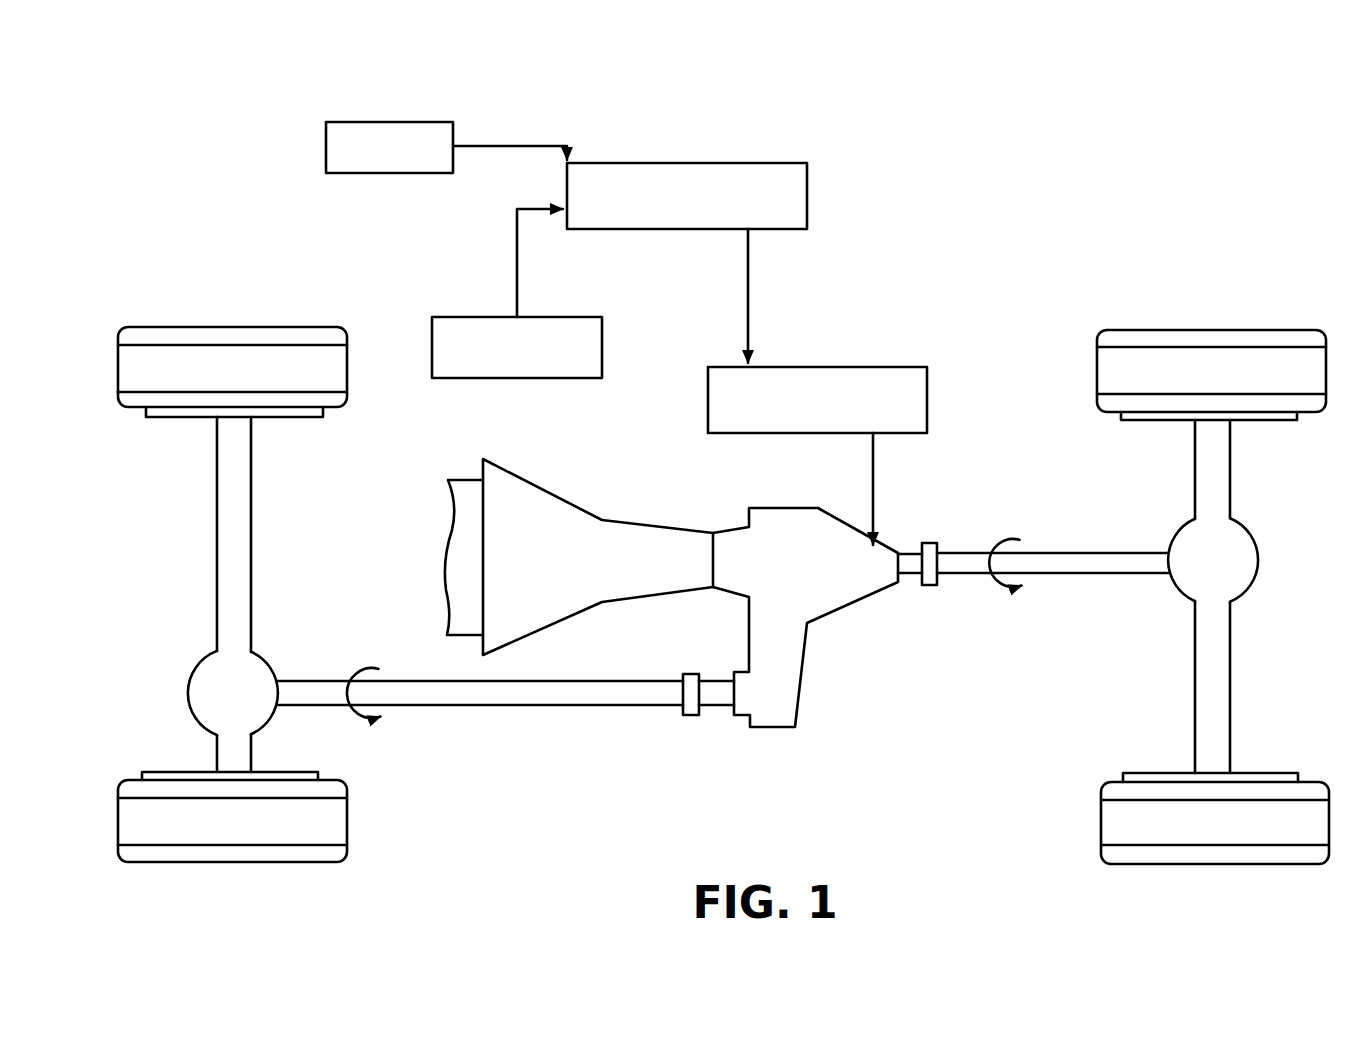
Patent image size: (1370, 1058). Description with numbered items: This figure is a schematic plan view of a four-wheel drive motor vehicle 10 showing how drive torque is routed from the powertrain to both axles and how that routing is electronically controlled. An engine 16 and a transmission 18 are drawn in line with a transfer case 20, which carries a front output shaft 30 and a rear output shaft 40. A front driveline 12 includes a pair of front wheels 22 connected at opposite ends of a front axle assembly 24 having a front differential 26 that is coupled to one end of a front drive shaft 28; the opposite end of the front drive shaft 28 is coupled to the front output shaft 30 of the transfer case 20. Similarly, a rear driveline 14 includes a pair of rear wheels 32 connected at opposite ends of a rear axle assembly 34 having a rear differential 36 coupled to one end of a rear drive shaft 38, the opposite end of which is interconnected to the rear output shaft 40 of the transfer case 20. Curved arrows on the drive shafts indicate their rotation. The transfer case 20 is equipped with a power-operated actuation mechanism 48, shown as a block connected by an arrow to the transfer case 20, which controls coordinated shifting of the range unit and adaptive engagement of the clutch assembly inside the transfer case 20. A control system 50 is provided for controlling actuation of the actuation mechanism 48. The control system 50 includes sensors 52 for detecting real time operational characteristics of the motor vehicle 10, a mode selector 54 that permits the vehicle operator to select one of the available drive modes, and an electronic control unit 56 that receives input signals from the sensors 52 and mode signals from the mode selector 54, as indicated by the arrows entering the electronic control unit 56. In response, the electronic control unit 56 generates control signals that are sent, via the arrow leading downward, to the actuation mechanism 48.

The motor vehicle 10 is at (930, 240).
The rear driveline 12 is at (308, 650).
The rear driveline 14 is at (1165, 643).
The engine 16 is at (465, 512).
The transmission 18 is at (580, 573).
The transfer case 20 is at (828, 572).
The rear wheels 22 is at (200, 372).
The rear axle assembly 24 is at (228, 591).
The rear differential 26 is at (233, 695).
The front drive shaft 28 is at (552, 695).
The front output shaft 30 is at (720, 692).
The rear wheels 32 is at (1183, 365).
The rear axle assembly 34 is at (1208, 482).
The rear differential 36 is at (1223, 567).
The rear drive shaft 38 is at (1087, 562).
The rear output shaft 40 is at (907, 553).
The power-operated actuation mechanism 48 is at (905, 390).
The control system 50 is at (565, 120).
The sensors 52 is at (353, 130).
The mode selector 54 is at (590, 365).
The electronic control unit 56 is at (780, 185).